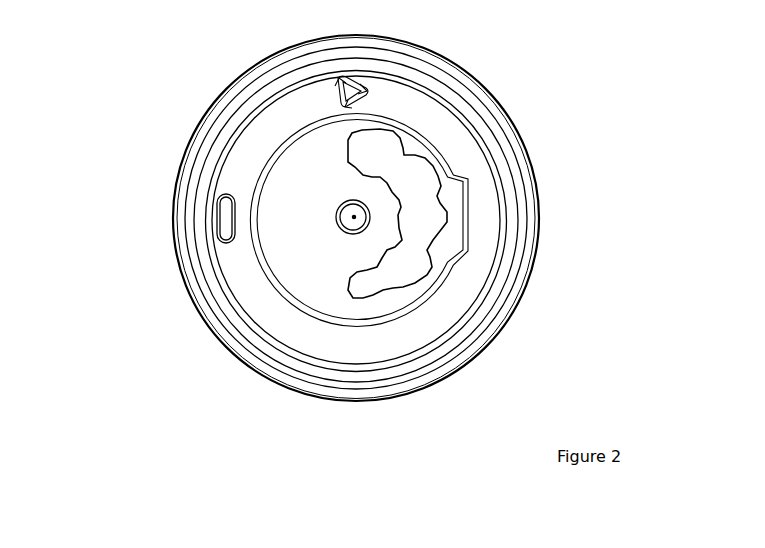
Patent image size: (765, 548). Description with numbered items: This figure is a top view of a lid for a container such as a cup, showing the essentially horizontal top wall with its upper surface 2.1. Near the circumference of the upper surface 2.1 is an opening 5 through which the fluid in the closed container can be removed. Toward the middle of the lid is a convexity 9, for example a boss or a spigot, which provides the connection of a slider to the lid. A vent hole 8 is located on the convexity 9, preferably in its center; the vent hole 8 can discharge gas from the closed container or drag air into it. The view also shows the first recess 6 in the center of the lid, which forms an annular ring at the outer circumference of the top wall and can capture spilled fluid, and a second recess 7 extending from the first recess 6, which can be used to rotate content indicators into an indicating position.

The upper surface 2.1 is at (425, 107).
The opening 5 is at (229, 228).
The central panel 6 is at (303, 185).
The drinking recess 7 is at (417, 186).
The vent hole 8 is at (354, 217).
The convexity 9 is at (350, 229).